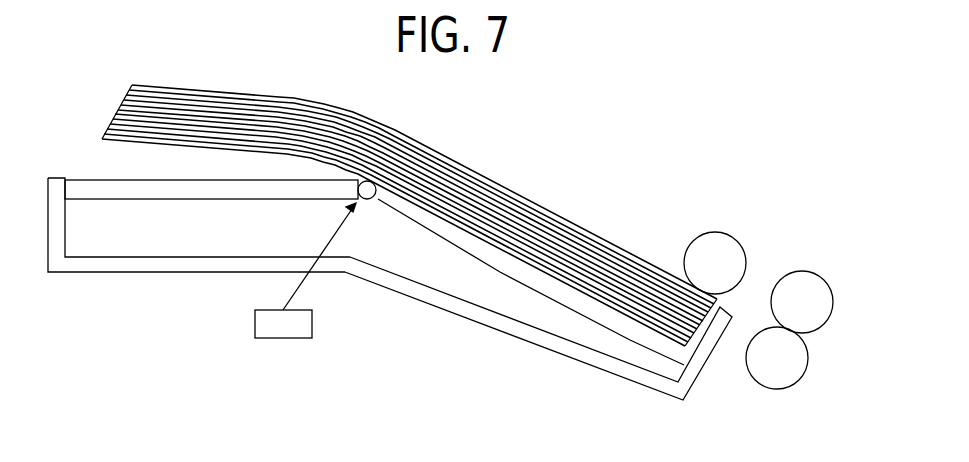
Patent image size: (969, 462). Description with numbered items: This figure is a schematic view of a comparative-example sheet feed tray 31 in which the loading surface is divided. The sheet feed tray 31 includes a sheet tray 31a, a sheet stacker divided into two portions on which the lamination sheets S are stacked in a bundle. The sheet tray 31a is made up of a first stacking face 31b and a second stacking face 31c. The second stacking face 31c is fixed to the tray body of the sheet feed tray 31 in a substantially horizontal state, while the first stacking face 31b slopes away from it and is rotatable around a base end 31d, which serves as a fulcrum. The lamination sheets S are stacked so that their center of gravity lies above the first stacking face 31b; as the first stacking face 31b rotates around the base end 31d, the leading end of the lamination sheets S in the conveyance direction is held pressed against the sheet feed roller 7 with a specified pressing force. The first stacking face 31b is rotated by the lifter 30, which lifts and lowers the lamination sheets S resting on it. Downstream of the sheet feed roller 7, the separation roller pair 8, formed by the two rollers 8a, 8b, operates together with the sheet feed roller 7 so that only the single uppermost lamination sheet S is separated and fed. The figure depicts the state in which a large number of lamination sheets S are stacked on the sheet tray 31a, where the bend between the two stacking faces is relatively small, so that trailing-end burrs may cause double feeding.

The lamination sheets S is at (360, 114).
The sheet feed roller 7 is at (715, 232).
The separation roller pair 8 is at (800, 332).
The separation roller 8a is at (800, 271).
The separation roller 8b is at (777, 389).
The lifter 30 is at (283, 338).
The sheet feed tray 31 is at (390, 289).
The sheet tray 31a is at (428, 240).
The first stacking face 31b is at (537, 292).
The second stacking face 31c is at (205, 200).
The base end 31d is at (372, 200).